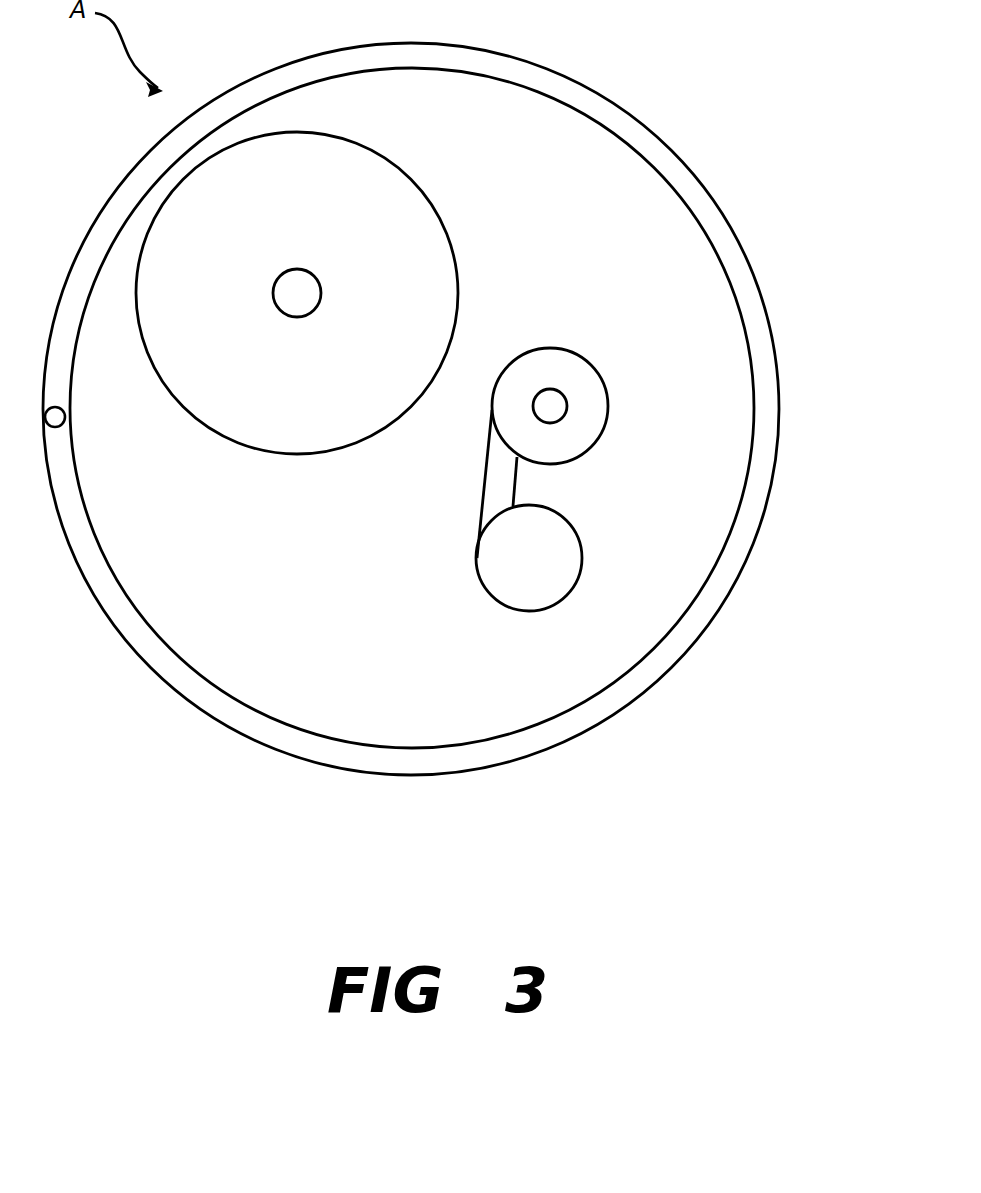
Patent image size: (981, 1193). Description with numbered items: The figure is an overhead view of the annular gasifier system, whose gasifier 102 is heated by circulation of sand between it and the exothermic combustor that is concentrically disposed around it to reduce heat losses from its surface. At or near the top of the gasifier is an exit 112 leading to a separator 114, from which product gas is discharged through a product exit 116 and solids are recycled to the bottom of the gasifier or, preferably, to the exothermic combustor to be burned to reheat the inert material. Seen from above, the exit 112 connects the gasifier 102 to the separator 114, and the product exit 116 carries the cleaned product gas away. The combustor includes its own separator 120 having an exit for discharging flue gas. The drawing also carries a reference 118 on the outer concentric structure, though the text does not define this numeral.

The gasifier 102 is at (582, 555).
The exit 112 is at (517, 482).
The separator 114 is at (588, 366).
The product exit 116 is at (570, 403).
The housing ring 118 is at (782, 402).
The separator 120 is at (458, 290).